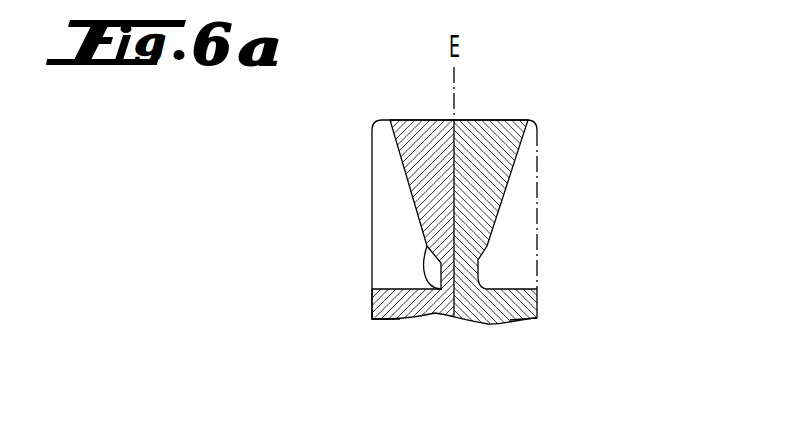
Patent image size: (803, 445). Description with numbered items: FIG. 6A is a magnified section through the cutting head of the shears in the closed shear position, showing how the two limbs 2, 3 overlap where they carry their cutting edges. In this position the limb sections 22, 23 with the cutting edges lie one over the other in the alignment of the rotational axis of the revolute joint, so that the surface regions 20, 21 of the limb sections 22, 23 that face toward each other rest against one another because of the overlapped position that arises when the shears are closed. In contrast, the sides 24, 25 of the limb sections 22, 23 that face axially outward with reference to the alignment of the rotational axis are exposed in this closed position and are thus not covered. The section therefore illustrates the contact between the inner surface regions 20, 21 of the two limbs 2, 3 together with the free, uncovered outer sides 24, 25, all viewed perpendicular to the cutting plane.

The limb 2 is at (498, 328).
The limb 3 is at (383, 322).
The surface region 20 is at (453, 146).
The surface region 21 is at (454, 172).
The limb section 22 is at (385, 295).
The limb section 23 is at (515, 300).
The side 24 is at (372, 183).
The side 25 is at (538, 298).